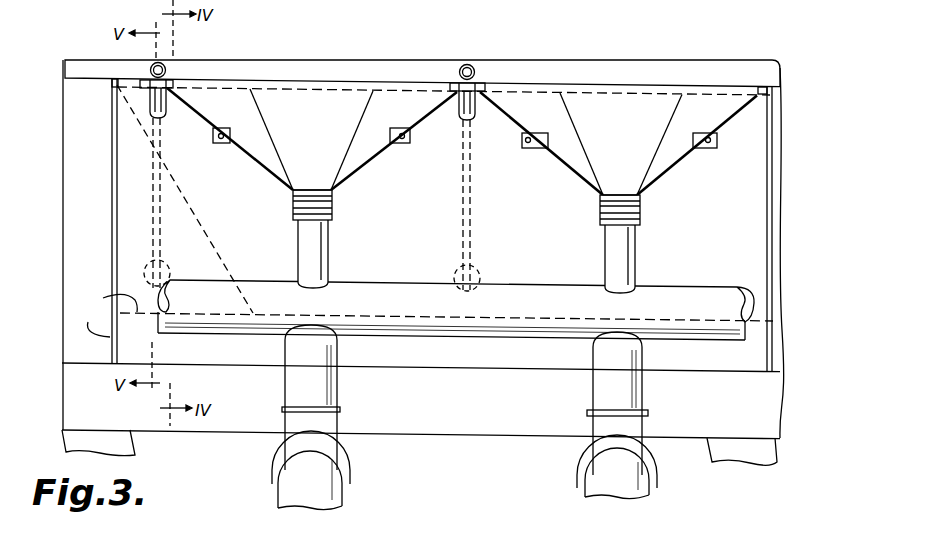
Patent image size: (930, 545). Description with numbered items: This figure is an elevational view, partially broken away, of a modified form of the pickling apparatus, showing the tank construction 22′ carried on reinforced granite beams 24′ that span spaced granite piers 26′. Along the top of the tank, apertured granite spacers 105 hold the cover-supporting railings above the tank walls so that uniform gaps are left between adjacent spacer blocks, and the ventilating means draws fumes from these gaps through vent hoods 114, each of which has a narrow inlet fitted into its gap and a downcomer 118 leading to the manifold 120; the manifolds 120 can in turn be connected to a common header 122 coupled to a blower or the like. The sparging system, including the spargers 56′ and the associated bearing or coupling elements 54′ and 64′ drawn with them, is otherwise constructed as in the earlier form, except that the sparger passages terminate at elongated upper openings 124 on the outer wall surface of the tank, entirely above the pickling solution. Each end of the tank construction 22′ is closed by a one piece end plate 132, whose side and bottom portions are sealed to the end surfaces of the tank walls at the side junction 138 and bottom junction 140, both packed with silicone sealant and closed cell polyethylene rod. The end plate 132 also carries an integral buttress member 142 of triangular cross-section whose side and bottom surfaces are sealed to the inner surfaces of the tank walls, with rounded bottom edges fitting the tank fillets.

The tank construction 22′ is at (752, 266).
The reinforced granite beam 24′ is at (247, 412).
The granite pier 26′ is at (732, 450).
The bearing 54′ is at (165, 278).
The sparger 56′ is at (157, 236).
The hanger eye 64′ is at (165, 66).
The apertured granite spacer 105 is at (148, 83).
The vent hood 114 is at (275, 158).
The downcomer 118 is at (307, 251).
The manifold 120 is at (353, 290).
The common header 122 is at (332, 496).
The elongated upper opening 124 is at (465, 117).
The one piece end plate 132 is at (63, 270).
The side junction 138 is at (112, 221).
The bottom junction 140 is at (103, 315).
The buttress member 142 is at (180, 166).